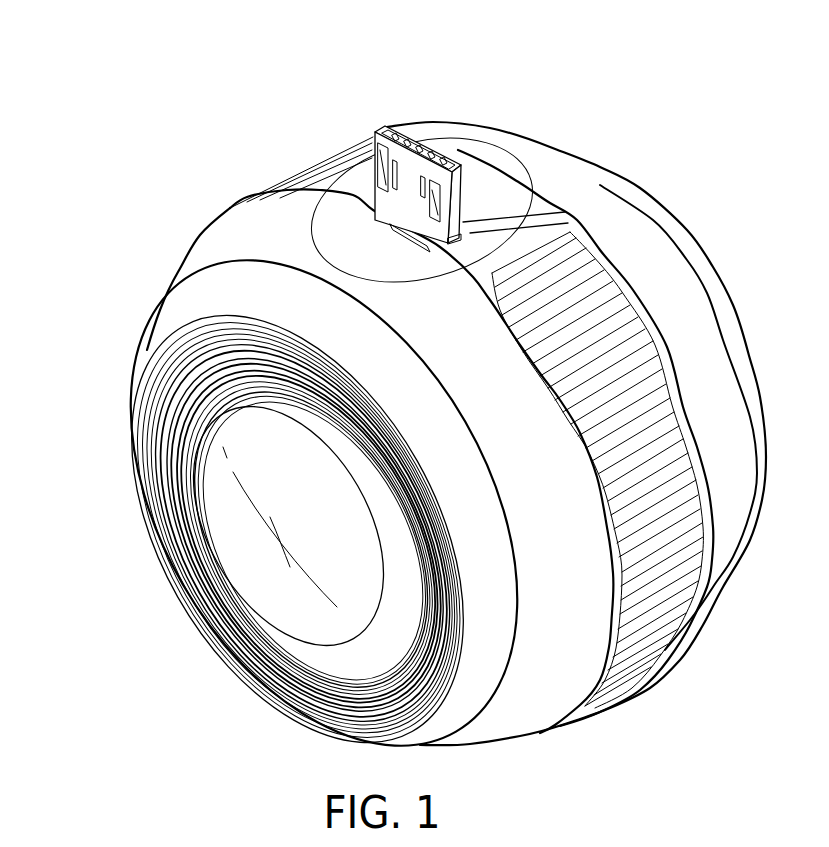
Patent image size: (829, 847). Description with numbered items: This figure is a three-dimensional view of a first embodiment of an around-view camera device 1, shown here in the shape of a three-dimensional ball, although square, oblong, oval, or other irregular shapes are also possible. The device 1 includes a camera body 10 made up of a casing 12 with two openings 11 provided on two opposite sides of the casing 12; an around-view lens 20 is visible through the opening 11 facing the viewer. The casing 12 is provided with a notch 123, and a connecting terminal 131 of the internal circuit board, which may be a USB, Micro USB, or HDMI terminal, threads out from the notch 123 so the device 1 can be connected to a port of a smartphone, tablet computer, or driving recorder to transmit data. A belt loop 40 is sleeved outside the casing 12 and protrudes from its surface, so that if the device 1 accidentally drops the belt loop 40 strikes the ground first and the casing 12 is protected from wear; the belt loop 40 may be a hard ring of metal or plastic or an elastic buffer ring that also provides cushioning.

The around-view camera device 1 is at (774, 110).
The camera body 10 is at (55, 223).
The opening 11 is at (210, 406).
The casing 12 is at (240, 245).
The around-view lens 20 is at (210, 490).
The belt loop 40 is at (595, 264).
The notch 123 is at (470, 235).
The connecting terminal 131 is at (391, 128).